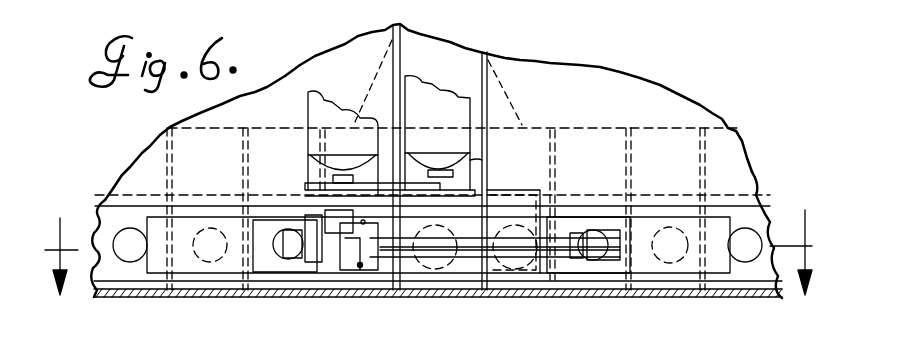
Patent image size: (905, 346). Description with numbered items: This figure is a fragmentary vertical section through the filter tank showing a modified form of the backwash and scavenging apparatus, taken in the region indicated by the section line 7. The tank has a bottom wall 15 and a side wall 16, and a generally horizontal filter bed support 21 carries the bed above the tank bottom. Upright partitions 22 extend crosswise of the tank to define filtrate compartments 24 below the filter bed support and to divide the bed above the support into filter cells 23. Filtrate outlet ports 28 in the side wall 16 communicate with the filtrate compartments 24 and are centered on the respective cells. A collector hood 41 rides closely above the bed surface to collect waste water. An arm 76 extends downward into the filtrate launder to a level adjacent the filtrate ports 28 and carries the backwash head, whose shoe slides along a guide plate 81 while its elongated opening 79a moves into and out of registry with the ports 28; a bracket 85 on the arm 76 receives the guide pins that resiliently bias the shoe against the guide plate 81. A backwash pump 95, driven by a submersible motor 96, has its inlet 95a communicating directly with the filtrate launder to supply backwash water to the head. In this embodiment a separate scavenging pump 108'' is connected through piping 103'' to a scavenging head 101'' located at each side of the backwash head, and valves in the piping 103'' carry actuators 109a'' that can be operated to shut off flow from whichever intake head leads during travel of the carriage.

The section line 7- 7 is at (428, 234).
The bottom wall 15 is at (326, 290).
The side wall 16 is at (600, 66).
The filter bed support 21 is at (652, 175).
The partitions 22 is at (636, 140).
The filter cells 23 is at (585, 150).
The filtrate compartments 24 is at (763, 268).
The filtrate outlet ports 28 is at (122, 262).
The collector hood 41 is at (512, 84).
The arm 76 is at (392, 36).
The elongated opening 79a is at (446, 290).
The guide plate 81 is at (106, 218).
The bracket 85 is at (510, 190).
The backwash pump 95 is at (470, 160).
The inlet 95a is at (435, 172).
The motor 96 is at (445, 100).
The scavenging head 101'' is at (438, 277).
The piping 103'' is at (425, 273).
The scavenging pump 108'' is at (347, 143).
The actuator 109a'' is at (445, 248).